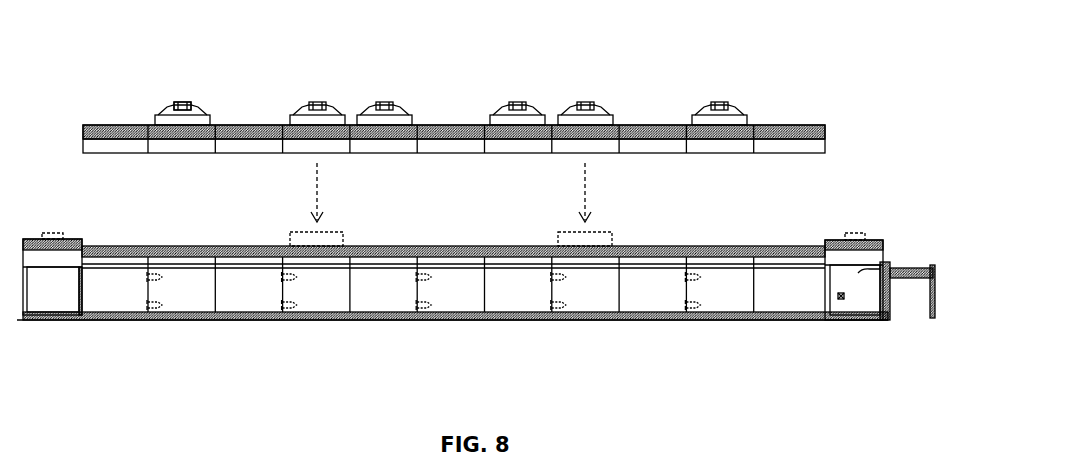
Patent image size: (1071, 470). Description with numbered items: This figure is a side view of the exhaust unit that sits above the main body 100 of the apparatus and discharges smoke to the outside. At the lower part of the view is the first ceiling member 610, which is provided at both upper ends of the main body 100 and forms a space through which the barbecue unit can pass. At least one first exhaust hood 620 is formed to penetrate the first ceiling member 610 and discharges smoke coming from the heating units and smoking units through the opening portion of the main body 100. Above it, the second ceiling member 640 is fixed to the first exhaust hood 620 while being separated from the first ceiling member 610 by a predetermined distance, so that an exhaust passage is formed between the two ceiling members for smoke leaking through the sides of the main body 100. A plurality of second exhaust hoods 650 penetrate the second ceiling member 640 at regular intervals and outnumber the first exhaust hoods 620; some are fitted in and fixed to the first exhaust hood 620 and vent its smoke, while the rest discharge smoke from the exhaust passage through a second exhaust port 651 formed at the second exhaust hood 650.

The main body 100 is at (192, 346).
The first ceiling member 610 is at (785, 247).
The first exhaust hood 620 is at (340, 241).
The second ceiling member 640 is at (804, 130).
The second exhaust hood 650 is at (205, 110).
The second exhaust port 651 is at (182, 102).